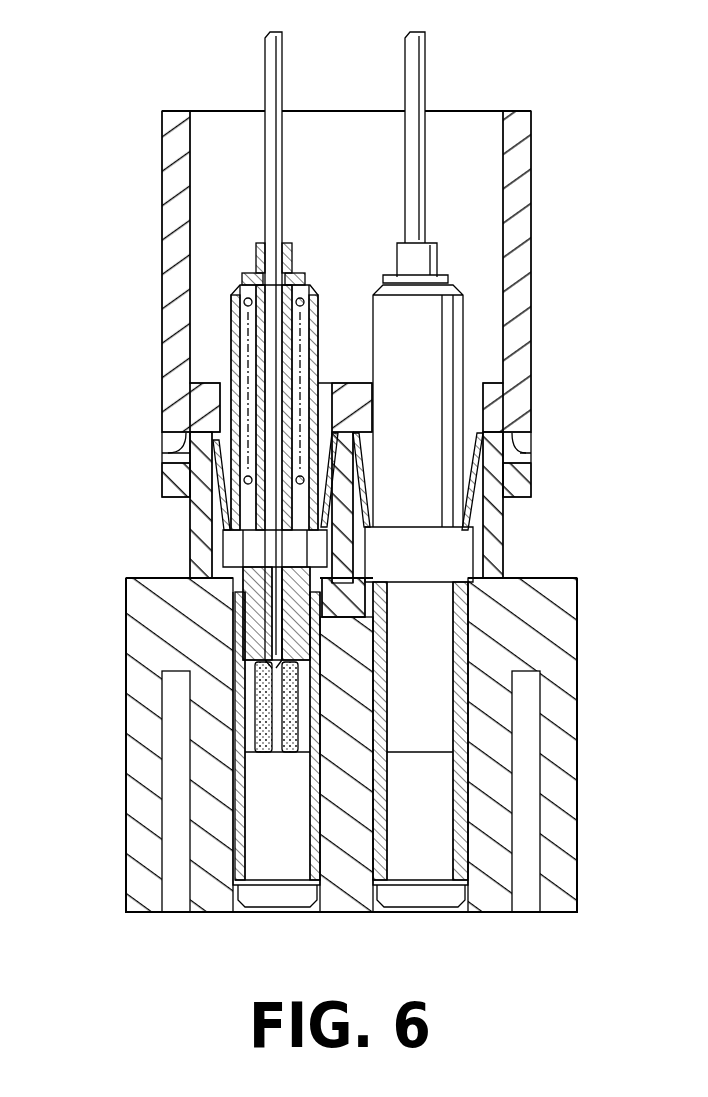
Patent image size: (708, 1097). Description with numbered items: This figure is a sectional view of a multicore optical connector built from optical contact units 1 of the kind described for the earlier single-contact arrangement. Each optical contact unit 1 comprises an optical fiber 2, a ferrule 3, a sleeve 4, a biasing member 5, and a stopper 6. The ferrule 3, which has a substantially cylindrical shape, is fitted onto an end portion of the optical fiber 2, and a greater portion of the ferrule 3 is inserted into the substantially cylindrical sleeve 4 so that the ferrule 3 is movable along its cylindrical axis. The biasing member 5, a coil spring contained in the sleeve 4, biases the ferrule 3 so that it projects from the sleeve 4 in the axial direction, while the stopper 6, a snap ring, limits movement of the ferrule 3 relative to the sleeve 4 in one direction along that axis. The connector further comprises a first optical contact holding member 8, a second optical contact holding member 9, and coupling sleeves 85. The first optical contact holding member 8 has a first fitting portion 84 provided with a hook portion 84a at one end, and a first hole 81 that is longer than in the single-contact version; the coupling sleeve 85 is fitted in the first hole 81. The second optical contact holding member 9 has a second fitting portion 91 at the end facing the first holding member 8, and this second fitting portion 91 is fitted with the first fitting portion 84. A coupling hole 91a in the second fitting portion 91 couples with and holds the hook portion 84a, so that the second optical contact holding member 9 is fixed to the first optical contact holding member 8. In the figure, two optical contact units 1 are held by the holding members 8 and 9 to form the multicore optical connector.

The optical contact unit 1 is at (305, 258).
The optical fiber 2 is at (265, 62).
The ferrule 3 is at (233, 640).
The sleeve 4 is at (230, 408).
The biasing member 5 is at (232, 303).
The stopper 6 is at (250, 277).
The first optical contact holding member 8 is at (125, 730).
The first hole 81 is at (240, 813).
The first fitting portion 84 is at (202, 547).
The hook portion 84a is at (185, 457).
The coupling sleeve 85 is at (240, 863).
The second optical contact holding member 9 is at (162, 317).
The second fitting portion 91 is at (162, 487).
The coupling hole 91a is at (170, 442).